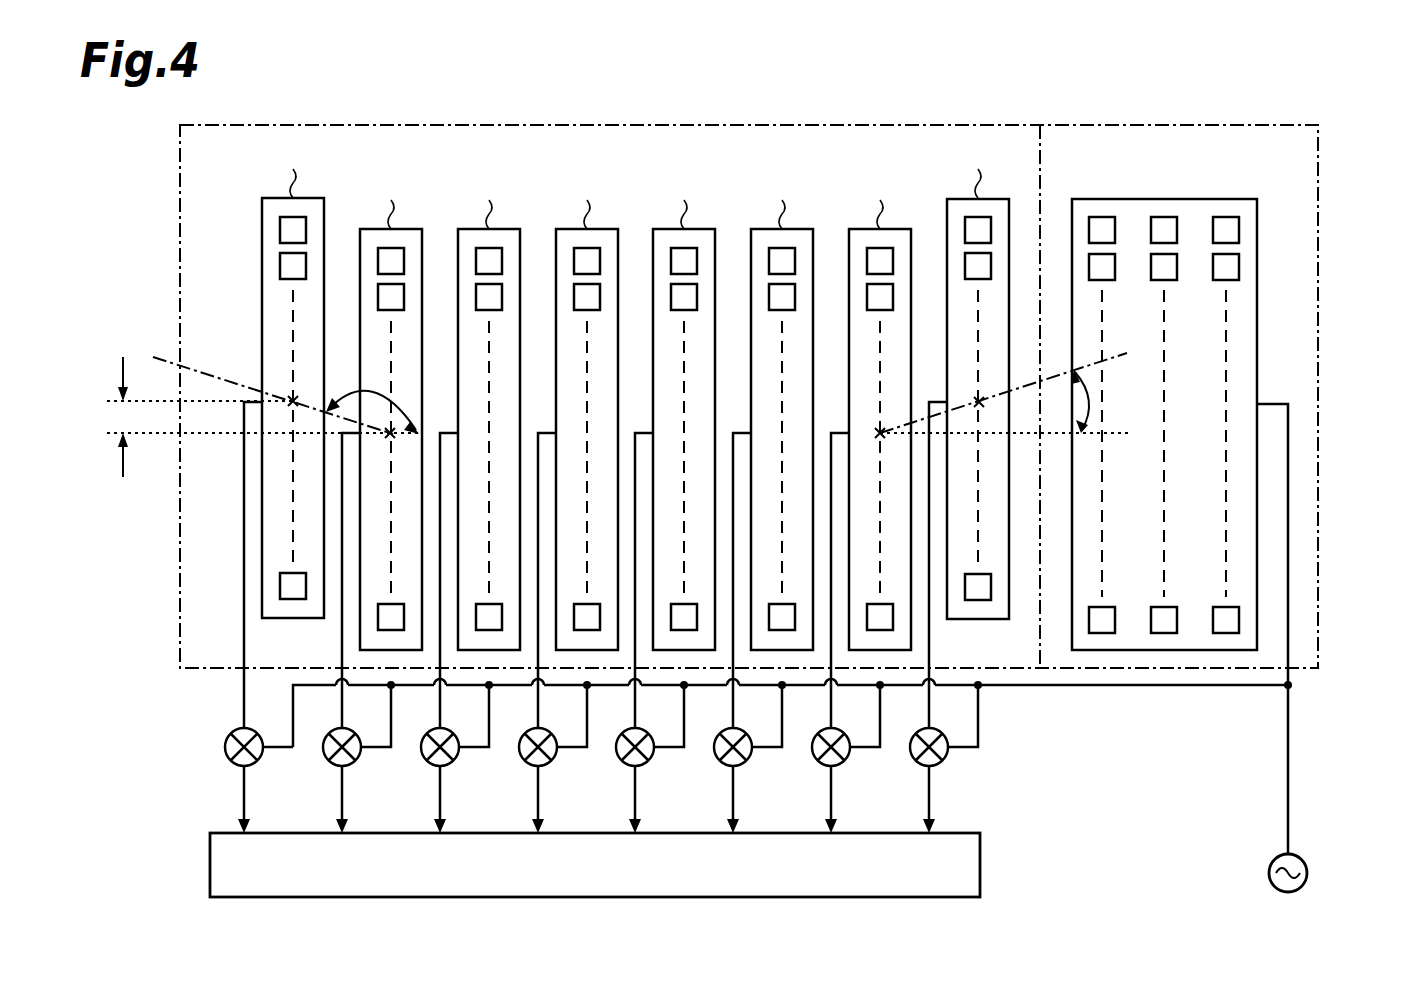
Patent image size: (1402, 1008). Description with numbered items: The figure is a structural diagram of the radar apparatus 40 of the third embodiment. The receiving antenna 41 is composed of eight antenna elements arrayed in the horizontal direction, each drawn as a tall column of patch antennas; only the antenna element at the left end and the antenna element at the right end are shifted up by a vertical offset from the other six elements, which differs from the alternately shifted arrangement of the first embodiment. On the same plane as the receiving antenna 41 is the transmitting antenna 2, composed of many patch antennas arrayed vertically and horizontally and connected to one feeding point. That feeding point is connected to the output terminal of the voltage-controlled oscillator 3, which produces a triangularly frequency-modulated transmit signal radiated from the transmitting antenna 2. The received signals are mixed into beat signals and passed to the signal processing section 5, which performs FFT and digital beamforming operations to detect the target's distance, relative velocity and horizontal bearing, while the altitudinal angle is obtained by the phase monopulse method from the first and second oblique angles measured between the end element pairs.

The transmitting antenna 2 is at (1319, 496).
The voltage-controlled oscillator 3 is at (1308, 866).
The signal processing section 5 is at (981, 862).
The radar apparatus 40 is at (1334, 188).
The receiving antenna 41 is at (180, 190).